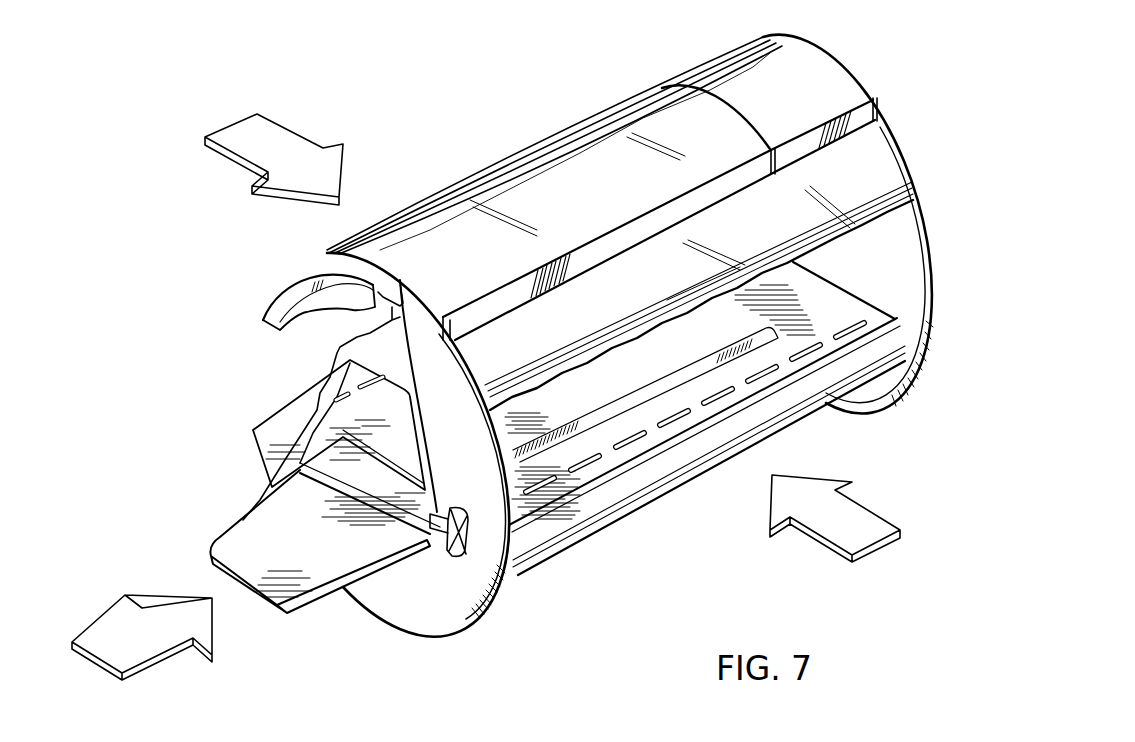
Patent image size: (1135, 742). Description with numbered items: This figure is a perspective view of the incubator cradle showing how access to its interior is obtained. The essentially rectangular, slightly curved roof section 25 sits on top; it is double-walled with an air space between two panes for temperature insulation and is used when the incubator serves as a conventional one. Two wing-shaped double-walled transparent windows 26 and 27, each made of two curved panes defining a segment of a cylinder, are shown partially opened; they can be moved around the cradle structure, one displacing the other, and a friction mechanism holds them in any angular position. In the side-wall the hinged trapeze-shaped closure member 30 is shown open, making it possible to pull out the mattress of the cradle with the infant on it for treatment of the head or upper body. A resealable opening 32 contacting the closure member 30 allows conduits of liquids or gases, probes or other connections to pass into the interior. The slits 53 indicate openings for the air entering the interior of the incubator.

The roof section 25 is at (547, 152).
The window 27 is at (840, 182).
The slits 53 is at (837, 330).
The window 26 is at (283, 307).
The closure member 30 is at (257, 515).
The resealable opening 32 is at (468, 560).